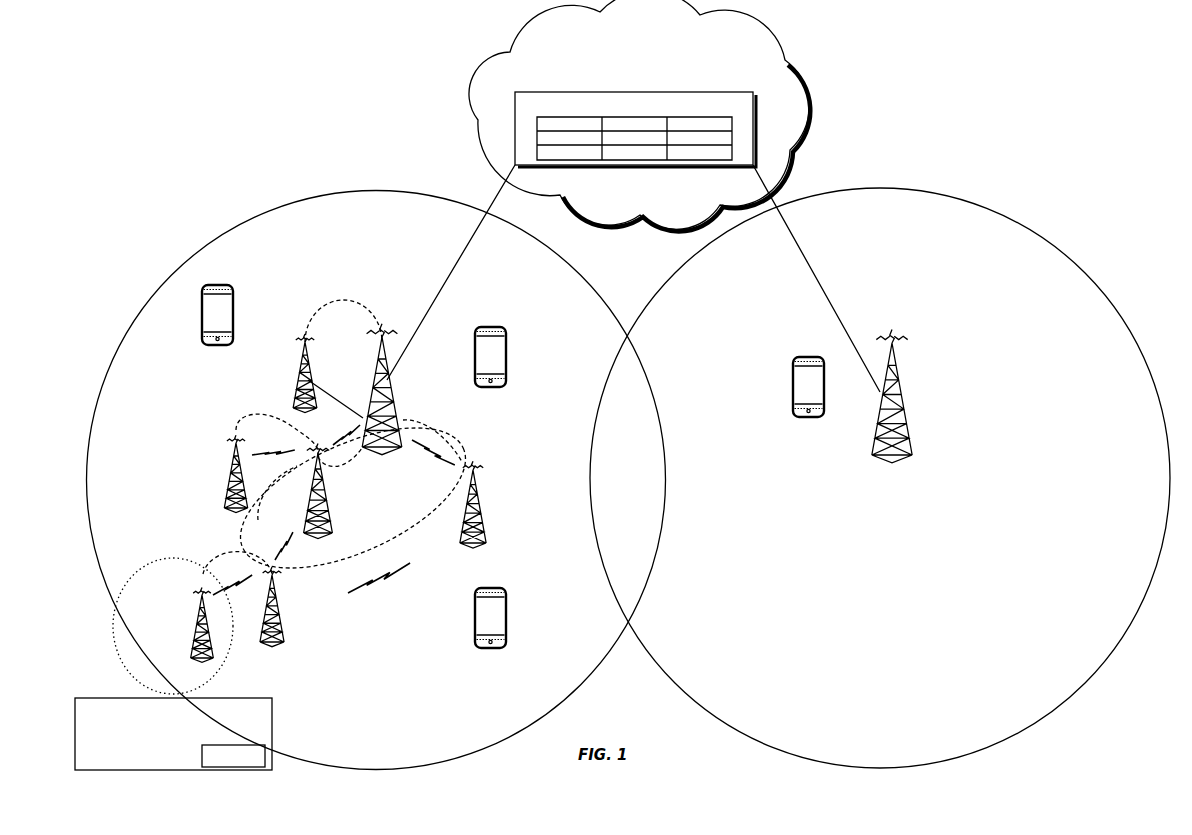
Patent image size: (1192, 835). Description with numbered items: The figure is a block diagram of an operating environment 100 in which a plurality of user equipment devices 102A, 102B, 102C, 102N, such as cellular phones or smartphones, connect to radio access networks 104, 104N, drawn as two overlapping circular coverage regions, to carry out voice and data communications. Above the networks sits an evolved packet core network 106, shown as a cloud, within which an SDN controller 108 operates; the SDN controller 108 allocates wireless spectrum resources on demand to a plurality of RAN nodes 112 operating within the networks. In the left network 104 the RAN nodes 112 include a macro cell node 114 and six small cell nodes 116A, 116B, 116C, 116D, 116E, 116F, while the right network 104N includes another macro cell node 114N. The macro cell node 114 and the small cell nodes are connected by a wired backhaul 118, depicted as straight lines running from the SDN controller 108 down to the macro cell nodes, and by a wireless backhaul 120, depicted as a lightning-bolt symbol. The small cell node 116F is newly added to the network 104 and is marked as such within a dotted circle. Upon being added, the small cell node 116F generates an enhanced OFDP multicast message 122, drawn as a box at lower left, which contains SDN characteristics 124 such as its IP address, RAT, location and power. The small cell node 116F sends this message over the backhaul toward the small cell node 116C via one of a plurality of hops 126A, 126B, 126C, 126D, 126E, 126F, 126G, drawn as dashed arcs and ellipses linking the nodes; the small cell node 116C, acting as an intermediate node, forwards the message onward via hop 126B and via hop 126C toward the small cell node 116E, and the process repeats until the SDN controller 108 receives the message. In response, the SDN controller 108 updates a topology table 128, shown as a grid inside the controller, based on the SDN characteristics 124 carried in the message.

The operating environment 100 is at (226, 86).
The user equipment device 102A is at (202, 333).
The user equipment device 102B is at (507, 362).
The user equipment device 102C is at (507, 625).
The user equipment device 102N is at (792, 380).
The radio access network 104 is at (376, 480).
The radio access network 104N is at (880, 478).
The evolved packet core network 106 is at (639, 115).
The SDN controller 108 is at (635, 129).
The RAN nodes 112 is at (186, 422).
The macro cell node 114 is at (405, 410).
The macro cell node 114N is at (908, 400).
The small cell node 116A is at (294, 392).
The small cell node 116B is at (226, 482).
The small cell node 116C is at (285, 630).
The small cell node 116D is at (330, 525).
The small cell node 116E is at (487, 518).
The small cell node 116F is at (198, 600).
The wired backhaul 118 is at (437, 297).
The wireless backhaul 120 is at (392, 583).
The enhanced OFDP multicast message 122 is at (173, 734).
The SDN characteristics 124 is at (233, 756).
The hop 126A is at (207, 560).
The hop 126B is at (295, 468).
The hop 126C is at (438, 505).
The hop 126D is at (234, 422).
The hop 126E is at (447, 432).
The hop 126F is at (340, 463).
The hop 126G is at (338, 300).
The topology table 128 is at (537, 133).